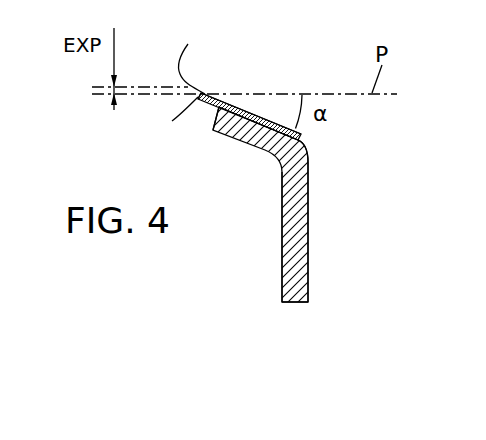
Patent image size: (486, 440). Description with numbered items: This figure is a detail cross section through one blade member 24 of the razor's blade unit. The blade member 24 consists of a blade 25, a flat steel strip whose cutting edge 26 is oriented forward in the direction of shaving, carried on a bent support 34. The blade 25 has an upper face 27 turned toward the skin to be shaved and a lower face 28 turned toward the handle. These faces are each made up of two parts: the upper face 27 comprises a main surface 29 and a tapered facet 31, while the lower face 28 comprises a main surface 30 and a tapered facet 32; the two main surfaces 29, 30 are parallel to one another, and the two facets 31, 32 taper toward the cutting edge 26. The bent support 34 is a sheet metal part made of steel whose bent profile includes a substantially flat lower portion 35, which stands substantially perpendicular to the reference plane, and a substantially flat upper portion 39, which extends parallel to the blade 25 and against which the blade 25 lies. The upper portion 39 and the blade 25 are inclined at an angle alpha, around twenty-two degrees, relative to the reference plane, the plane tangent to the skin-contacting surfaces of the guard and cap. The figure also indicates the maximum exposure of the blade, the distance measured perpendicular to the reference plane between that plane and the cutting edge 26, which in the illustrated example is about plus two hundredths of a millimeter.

The blade member 24 is at (366, 193).
The blade 25 is at (308, 137).
The cutting edge 26 is at (191, 57).
The upper face 27 is at (282, 114).
The lower face 28 is at (210, 107).
The main surface 29 is at (255, 118).
The main surface 30 is at (260, 122).
The tapered facet 31 is at (203, 91).
The tapered facet 32 is at (171, 115).
The bent support 34 is at (308, 298).
The lower portion 35 is at (290, 257).
The upper portion 39 is at (229, 128).